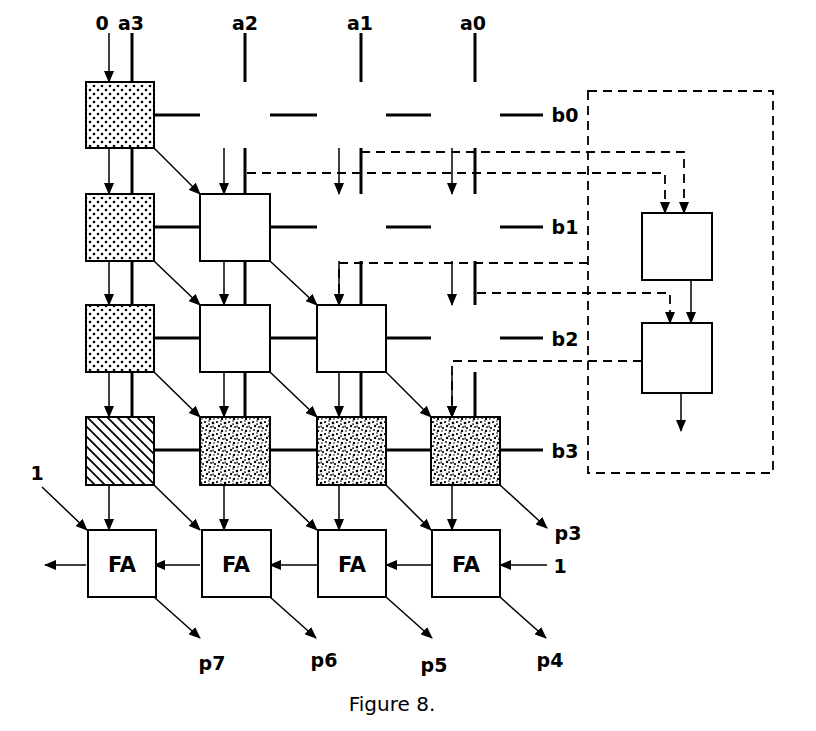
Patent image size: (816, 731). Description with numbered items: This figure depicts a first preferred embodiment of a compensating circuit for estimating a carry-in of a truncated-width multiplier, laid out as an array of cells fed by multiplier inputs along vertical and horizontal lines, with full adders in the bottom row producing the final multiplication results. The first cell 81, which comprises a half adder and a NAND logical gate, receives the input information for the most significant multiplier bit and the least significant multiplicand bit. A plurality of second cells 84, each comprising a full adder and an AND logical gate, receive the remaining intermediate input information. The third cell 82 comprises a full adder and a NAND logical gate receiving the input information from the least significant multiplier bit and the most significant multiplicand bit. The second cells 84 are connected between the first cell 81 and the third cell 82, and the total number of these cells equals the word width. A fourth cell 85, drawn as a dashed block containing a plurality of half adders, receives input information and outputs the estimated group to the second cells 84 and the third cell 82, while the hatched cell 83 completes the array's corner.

The first cell 81 is at (120, 227).
The third cell 82 is at (350, 451).
The hatched cell (corner cell) 83 is at (120, 451).
The second cell 84 is at (293, 283).
The fourth cell 85 is at (680, 269).